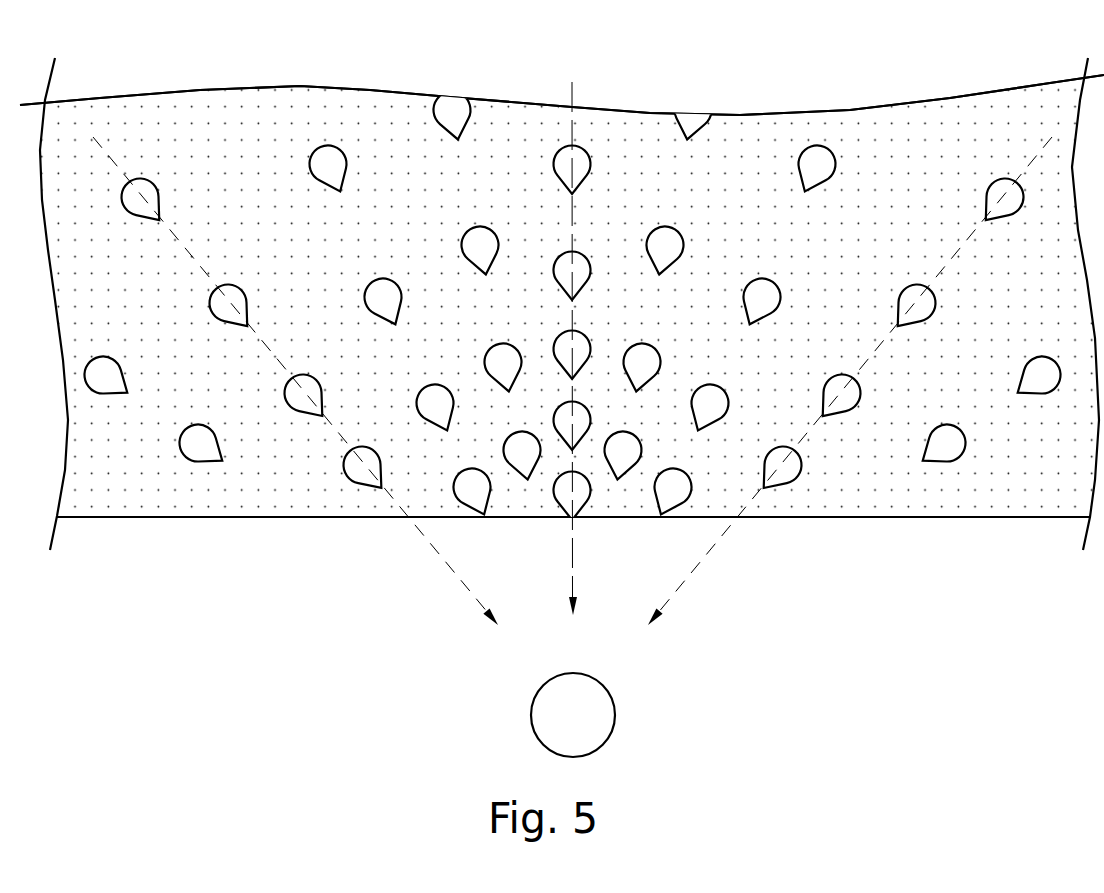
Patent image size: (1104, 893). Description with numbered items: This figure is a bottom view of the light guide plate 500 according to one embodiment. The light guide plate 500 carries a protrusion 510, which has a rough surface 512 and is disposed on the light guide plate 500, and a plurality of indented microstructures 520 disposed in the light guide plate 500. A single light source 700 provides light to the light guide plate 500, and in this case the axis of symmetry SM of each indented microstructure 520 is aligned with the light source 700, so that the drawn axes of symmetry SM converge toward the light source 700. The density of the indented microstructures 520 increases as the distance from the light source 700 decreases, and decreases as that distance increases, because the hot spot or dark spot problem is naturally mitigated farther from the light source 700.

The light guide plate 500 is at (295, 100).
The protrusion 510 is at (630, 128).
The rough surface 512 is at (562, 95).
The indented microstructure 520 is at (812, 150).
The light source 700 is at (607, 717).
The axis of symmetry SM is at (442, 557).